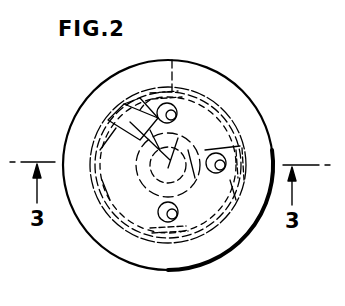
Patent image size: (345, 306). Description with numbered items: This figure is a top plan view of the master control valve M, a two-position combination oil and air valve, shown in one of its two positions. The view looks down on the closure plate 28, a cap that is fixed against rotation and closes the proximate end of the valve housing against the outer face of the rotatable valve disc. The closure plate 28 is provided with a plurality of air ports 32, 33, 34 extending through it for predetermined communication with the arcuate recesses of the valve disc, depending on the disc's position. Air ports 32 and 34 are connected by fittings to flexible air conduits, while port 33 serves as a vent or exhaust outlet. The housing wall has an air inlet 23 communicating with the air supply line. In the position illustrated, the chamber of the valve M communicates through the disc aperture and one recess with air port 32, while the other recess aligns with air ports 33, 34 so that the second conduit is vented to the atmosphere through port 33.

The closure plate 28 is at (129, 250).
The master control valve M is at (227, 78).
The air inlet 23 is at (173, 60).
The air port 32 is at (173, 112).
The air port 33 is at (222, 160).
The air port 34 is at (173, 213).